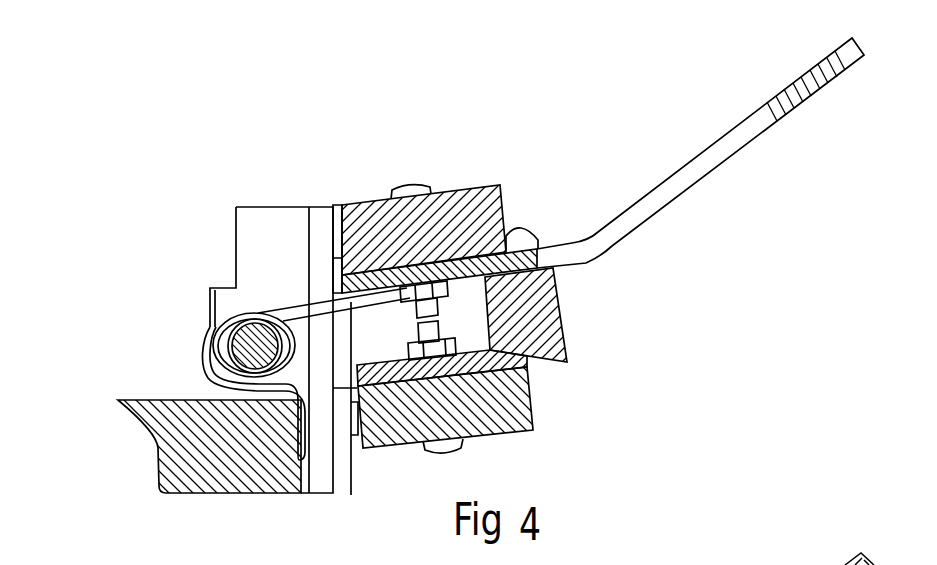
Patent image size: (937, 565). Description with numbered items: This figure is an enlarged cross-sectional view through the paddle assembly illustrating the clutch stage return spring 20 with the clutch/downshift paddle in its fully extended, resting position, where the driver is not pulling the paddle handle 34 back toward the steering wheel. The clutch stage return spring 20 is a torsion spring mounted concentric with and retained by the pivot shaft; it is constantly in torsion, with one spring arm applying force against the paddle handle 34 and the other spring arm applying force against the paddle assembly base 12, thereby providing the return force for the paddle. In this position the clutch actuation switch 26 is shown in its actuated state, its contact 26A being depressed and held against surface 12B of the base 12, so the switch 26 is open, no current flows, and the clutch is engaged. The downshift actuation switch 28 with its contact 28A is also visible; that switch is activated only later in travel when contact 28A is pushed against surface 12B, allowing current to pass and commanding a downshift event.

The paddle assembly base 12 is at (260, 450).
The surface 12B is at (335, 476).
The clutch stage return spring 20 is at (293, 308).
The clutch actuation switch 26 is at (366, 219).
The contact 26A is at (338, 248).
The downshift actuation switch 28 is at (527, 418).
The contact 28A is at (357, 493).
The paddle handle 34 is at (692, 173).